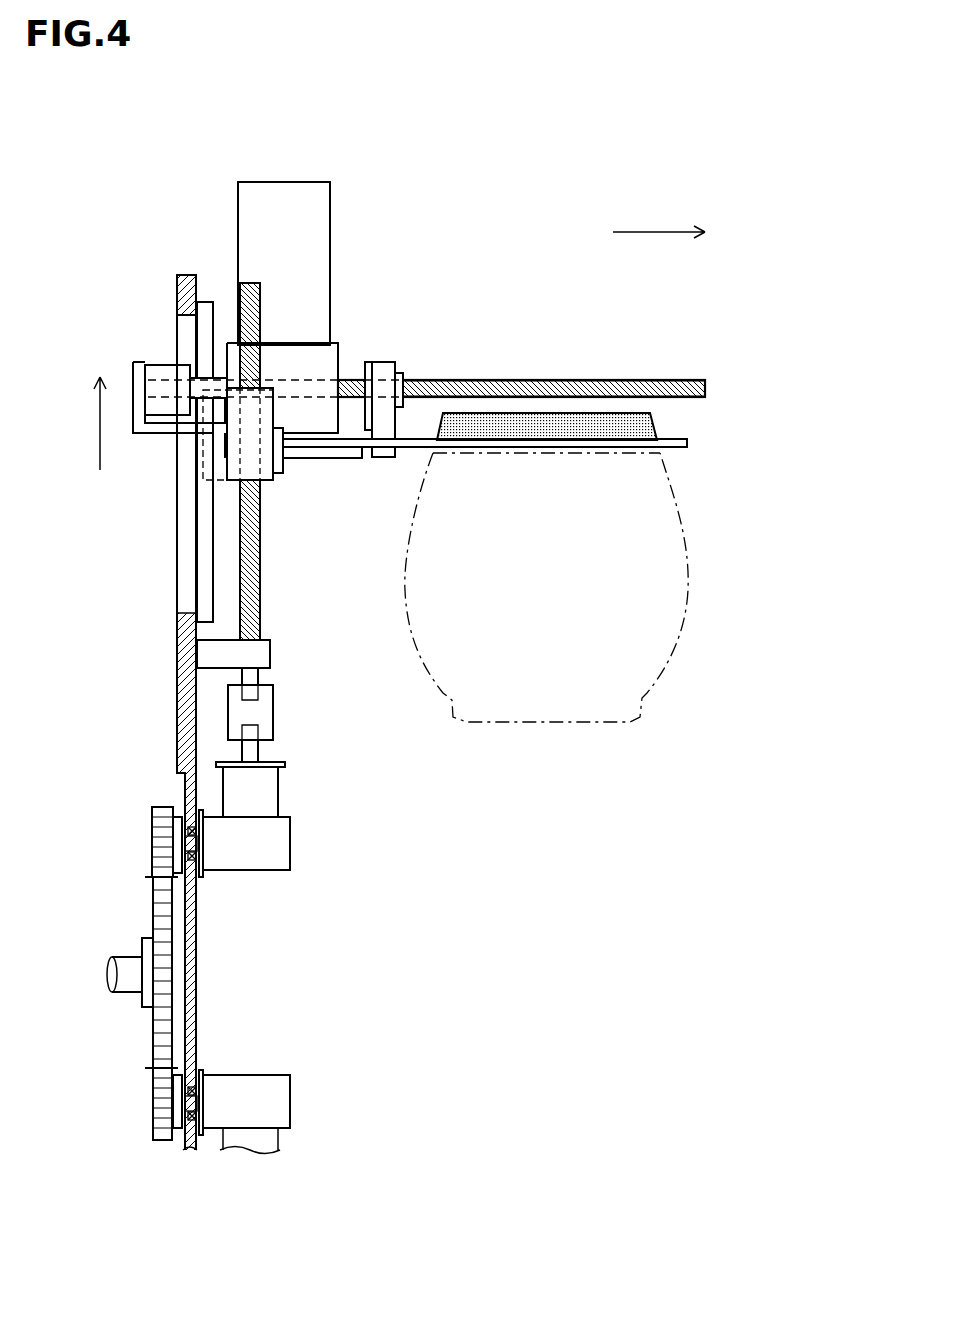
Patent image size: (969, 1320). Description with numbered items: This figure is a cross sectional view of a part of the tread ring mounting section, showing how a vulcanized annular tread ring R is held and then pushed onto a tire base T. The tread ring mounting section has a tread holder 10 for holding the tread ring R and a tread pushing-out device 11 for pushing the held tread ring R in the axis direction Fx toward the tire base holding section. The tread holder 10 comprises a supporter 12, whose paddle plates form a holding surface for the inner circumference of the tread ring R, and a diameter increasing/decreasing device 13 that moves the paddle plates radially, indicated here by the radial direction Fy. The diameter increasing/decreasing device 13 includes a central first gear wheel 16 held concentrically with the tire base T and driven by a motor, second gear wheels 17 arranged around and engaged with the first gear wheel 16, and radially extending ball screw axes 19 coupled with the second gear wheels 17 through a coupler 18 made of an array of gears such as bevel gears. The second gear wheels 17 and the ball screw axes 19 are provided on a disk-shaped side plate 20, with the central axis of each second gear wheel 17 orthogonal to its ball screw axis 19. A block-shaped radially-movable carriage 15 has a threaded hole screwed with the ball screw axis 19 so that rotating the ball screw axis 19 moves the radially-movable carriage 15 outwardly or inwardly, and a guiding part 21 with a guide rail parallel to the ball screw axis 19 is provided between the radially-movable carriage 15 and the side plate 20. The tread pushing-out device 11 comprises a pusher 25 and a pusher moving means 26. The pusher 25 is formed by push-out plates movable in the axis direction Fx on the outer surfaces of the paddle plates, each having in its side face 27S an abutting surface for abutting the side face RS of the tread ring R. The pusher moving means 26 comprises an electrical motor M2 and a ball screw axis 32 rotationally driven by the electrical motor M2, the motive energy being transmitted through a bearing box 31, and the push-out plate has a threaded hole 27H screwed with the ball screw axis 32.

The tread holder 10 is at (527, 915).
The tread pushing-out device 11 is at (490, 162).
The supporter 12 is at (540, 440).
The diameter increasing/decreasing device 13 is at (324, 764).
The radially-movable carriage 15 is at (235, 482).
The first gear wheel 16 is at (153, 1020).
The second gear wheel 17 is at (152, 822).
The coupler 18 is at (292, 835).
The ball screw axis 19 is at (263, 590).
The side plate 20 is at (177, 700).
The guiding part 21 is at (213, 540).
The pusher 25 is at (385, 367).
The pusher moving means 26 is at (367, 248).
The threaded hole 27H is at (397, 423).
The side face 27S is at (433, 422).
The bearing box 31 is at (290, 345).
The ball screw axis 32 is at (680, 398).
The electrical motor M2 is at (308, 182).
The tread ring R is at (600, 423).
The side face RS is at (440, 398).
The tire base T is at (683, 633).
The axis direction Fx is at (652, 232).
The upward direction Fy is at (97, 413).